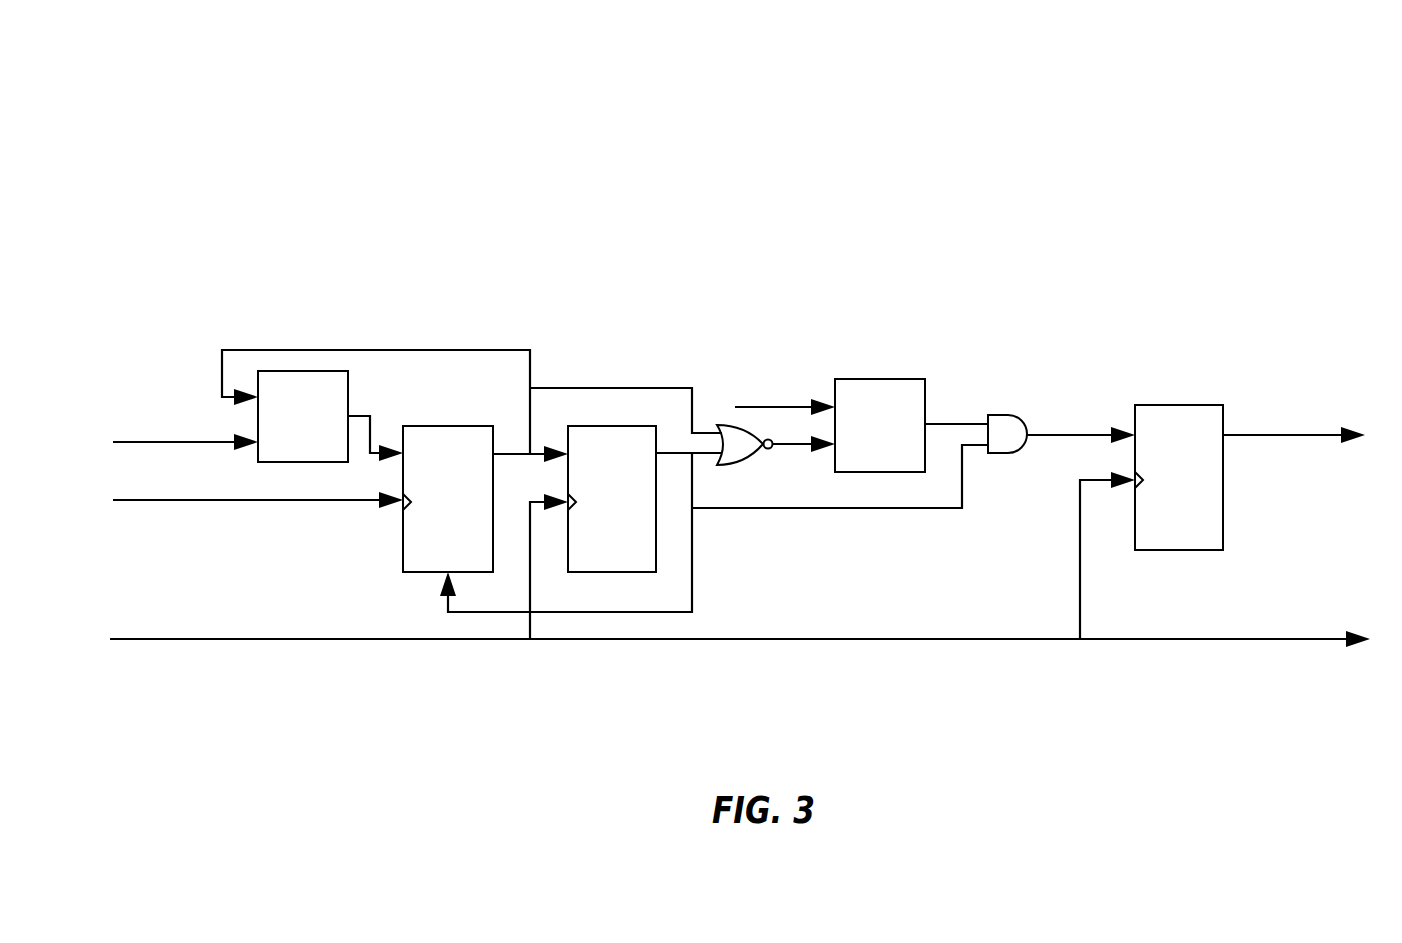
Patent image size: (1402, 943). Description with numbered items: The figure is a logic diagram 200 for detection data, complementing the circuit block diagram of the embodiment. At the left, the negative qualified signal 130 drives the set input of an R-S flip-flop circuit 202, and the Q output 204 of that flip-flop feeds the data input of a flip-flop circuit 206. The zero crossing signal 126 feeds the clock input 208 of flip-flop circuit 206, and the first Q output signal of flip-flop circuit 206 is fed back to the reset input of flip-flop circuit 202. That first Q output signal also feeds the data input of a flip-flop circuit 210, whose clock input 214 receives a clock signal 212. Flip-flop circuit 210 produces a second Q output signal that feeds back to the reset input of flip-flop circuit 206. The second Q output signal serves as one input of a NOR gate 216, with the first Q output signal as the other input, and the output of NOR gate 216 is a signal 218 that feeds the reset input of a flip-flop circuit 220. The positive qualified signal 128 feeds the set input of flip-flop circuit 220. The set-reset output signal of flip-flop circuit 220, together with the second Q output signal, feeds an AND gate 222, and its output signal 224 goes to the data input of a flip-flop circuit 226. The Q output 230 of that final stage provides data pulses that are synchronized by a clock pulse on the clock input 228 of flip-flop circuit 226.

The logic diagram 200 is at (668, 84).
The negative qualified signal 130 is at (138, 443).
The zero crossing signal 126 is at (223, 502).
The R-S flip-flop circuit 202 is at (302, 382).
The Q output 204 is at (373, 423).
The flip-flop circuit 206 is at (458, 430).
The clock input 208 is at (397, 503).
The flip-flop circuit 210 is at (610, 430).
The clock input 214 is at (568, 503).
The clock signal 212 is at (360, 639).
The NOR gate 216 is at (738, 460).
The output signal of NOR gate 218 is at (782, 447).
The positive qualified signal 128 is at (765, 403).
The flip-flop circuit 220 is at (900, 388).
The AND gate 222 is at (1002, 421).
The output signal 224 is at (1065, 433).
The flip-flop circuit 226 is at (1190, 403).
The clock input 228 is at (1130, 483).
The Q output 230 is at (1292, 438).